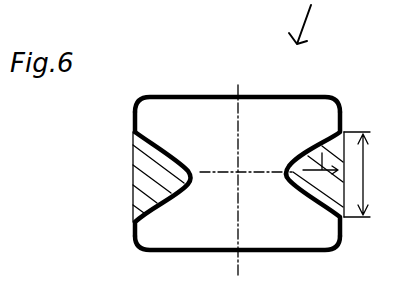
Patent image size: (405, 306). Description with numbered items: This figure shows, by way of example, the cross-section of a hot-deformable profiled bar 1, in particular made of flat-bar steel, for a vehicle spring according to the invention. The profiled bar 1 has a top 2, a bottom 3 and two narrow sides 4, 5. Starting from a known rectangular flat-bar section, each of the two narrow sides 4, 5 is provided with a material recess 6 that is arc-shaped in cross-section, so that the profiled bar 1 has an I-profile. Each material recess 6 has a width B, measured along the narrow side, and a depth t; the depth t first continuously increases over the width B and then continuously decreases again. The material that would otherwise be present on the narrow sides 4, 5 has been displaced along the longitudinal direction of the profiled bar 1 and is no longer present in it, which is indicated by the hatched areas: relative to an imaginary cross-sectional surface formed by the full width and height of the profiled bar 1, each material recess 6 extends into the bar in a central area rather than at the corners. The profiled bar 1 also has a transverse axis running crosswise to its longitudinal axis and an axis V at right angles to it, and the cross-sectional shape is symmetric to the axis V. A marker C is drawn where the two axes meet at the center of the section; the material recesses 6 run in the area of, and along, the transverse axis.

The profiled bar 1 is at (217, 171).
The top 2 is at (164, 95).
The bottom 3 is at (162, 250).
The narrow side 4 is at (340, 102).
The narrow side 5 is at (128, 116).
The material recess 6 is at (124, 184).
The width of the material recess B is at (366, 174).
The depth of the material recess t is at (191, 171).
The center C is at (208, 170).
The axis V is at (247, 121).